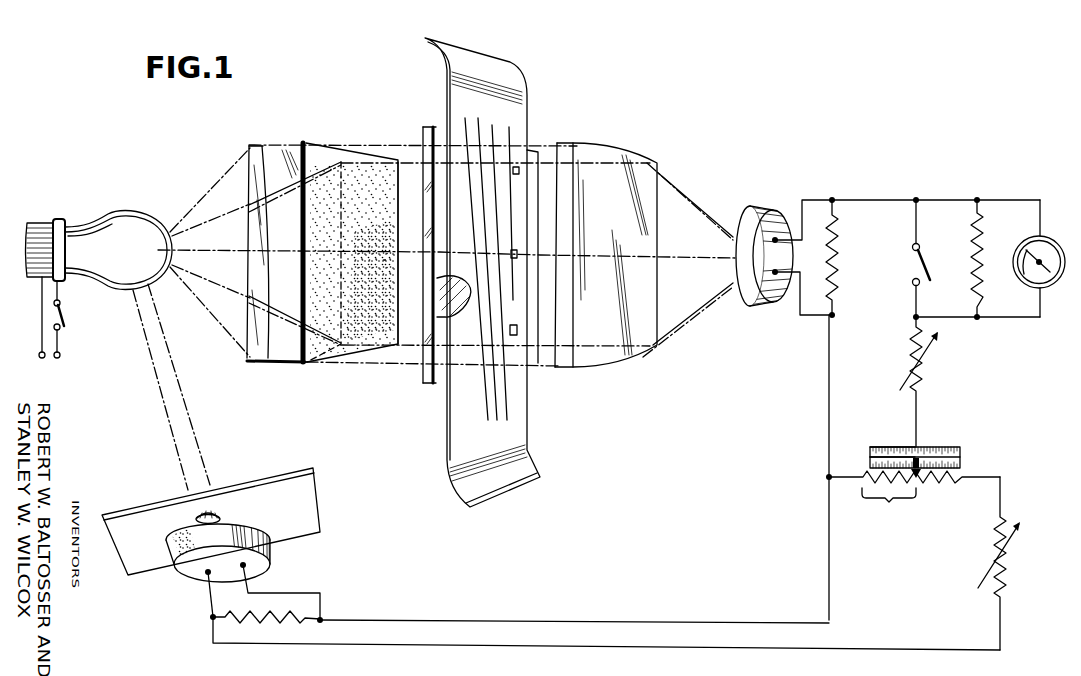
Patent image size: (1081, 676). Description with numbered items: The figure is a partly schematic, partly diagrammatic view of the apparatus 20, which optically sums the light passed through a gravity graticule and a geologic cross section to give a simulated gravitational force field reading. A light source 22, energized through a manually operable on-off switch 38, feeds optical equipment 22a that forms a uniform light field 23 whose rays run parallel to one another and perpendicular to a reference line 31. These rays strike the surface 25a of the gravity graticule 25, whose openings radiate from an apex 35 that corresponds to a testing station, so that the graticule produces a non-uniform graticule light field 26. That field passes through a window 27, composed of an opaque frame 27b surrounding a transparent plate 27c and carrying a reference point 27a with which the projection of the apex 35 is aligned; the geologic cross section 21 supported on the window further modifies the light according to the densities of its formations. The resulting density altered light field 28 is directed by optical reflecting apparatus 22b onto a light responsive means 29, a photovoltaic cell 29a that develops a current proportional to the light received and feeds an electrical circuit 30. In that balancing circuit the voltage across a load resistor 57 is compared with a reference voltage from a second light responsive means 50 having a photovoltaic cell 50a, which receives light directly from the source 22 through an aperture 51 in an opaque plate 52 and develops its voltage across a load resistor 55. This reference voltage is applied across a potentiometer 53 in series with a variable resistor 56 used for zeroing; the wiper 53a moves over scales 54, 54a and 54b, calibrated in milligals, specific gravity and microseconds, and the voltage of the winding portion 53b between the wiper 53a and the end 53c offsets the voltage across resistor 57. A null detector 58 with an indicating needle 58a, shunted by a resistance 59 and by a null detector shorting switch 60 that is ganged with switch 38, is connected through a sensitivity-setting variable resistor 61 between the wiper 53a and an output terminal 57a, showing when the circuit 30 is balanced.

The apparatus 20 is at (776, 50).
The geologic cross section 21 is at (452, 63).
The light source 22 is at (130, 212).
The optical equipment 22a is at (252, 144).
The optical reflecting apparatus 22b is at (588, 147).
The light field 23 is at (285, 363).
The gravity graticule 25 is at (364, 152).
The graticule surface 25a is at (302, 160).
The graticule light field 26 is at (415, 165).
The window 27 is at (437, 120).
The reference point 27a is at (510, 253).
The frame 27b is at (423, 383).
The transparent plate 27c is at (453, 300).
The density altered light field 28 is at (683, 205).
The light responsive means 29 is at (770, 200).
The photovoltaic cell 29a is at (753, 303).
The electrical circuit 30 is at (737, 649).
The reference line 31 is at (230, 249).
The apex 35 is at (392, 252).
The on-off switch 38 is at (62, 313).
The second light responsive means 50 is at (358, 528).
The photovoltaic cell 50a is at (192, 580).
The aperture 51 is at (210, 515).
The opaque plate 52 is at (278, 474).
The potentiometer 53 is at (937, 486).
The wiper 53a is at (921, 464).
The winding portion 53b is at (889, 507).
The potentiometer end 53c is at (827, 476).
The scale 54 is at (962, 461).
The scale 54a is at (870, 458).
The scale 54b is at (882, 440).
The load resistor 55 is at (247, 609).
The variable resistor 56 is at (988, 536).
The load resistor 57 is at (837, 248).
The output terminal 57a is at (834, 199).
The null detector 58 is at (1063, 234).
The indicating needle 58a is at (1022, 276).
The resistance 59 is at (973, 236).
The null detector shorting switch 60 is at (913, 267).
The variable resistor 61 is at (908, 354).